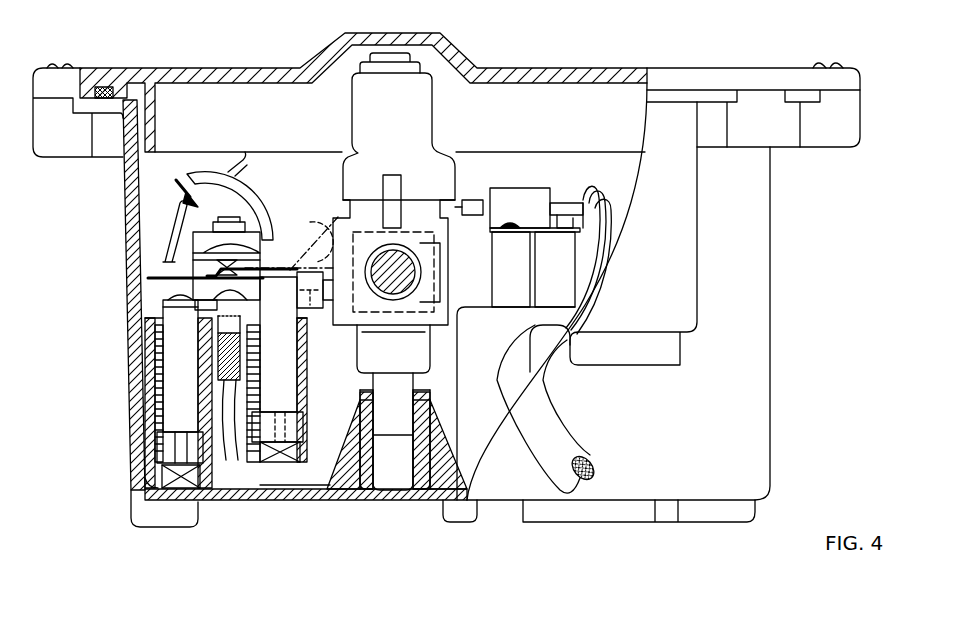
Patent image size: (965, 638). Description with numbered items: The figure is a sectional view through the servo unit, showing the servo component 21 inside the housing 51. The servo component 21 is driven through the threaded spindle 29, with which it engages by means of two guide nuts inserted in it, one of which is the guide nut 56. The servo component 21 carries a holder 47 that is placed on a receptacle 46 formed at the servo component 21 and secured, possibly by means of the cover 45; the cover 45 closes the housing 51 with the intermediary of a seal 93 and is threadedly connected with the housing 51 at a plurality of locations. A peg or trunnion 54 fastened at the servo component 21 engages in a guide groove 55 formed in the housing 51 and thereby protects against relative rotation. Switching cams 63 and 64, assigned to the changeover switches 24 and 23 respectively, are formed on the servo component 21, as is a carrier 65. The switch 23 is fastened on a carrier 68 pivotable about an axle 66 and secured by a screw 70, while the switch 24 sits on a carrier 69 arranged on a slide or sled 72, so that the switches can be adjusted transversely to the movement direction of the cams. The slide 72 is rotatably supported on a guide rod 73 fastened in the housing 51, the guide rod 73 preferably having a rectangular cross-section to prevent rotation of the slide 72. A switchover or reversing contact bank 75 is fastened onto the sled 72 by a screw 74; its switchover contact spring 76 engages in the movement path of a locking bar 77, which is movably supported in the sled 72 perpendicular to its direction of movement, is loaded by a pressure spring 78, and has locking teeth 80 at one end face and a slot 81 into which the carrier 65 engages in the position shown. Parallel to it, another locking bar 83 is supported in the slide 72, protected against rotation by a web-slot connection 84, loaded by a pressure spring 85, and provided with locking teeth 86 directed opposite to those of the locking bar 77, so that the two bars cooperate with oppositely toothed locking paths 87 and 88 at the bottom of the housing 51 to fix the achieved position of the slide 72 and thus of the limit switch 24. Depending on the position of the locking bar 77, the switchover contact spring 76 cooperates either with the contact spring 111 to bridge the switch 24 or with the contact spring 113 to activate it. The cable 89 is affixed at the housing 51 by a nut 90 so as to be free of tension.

The servo component 21 is at (381, 362).
The switch 23 is at (510, 188).
The switch 24 is at (320, 216).
The threaded spindle 29 is at (422, 268).
The cover 45 is at (677, 76).
The receptacle 46 is at (385, 53).
The holder 47 is at (405, 113).
The housing 51 is at (708, 362).
The peg or trunnion 54 is at (413, 384).
The guide groove 55 is at (399, 492).
The guide nut 56 is at (430, 290).
The switching cam 63 is at (312, 322).
The switching cam 64 is at (464, 198).
The carrier 65 is at (314, 240).
The axle 66 is at (535, 210).
The carrier 68 is at (557, 234).
The carrier 69 is at (190, 363).
The screw 70 is at (627, 228).
The slide or sled 72 is at (133, 424).
The guide rod 73 is at (205, 486).
The screw 74 is at (230, 226).
The switchover or reversing contact bank 75 is at (171, 187).
The switchover contact spring 76 is at (262, 264).
The locking bar 77 is at (306, 392).
The pressure spring 78 is at (306, 418).
The locking teeth 80 is at (262, 492).
The slot 81 is at (258, 316).
The locking bar 83 is at (169, 388).
The web-slot connection 84 is at (155, 442).
The pressure spring 85 is at (143, 390).
The locking teeth 86 is at (185, 494).
The locking path 87 is at (145, 476).
The locking path 88 is at (292, 488).
The cable 89 is at (548, 406).
The nut 90 is at (550, 348).
The seal 93 is at (103, 86).
The contact spring 111 is at (176, 248).
The contact spring 113 is at (170, 282).